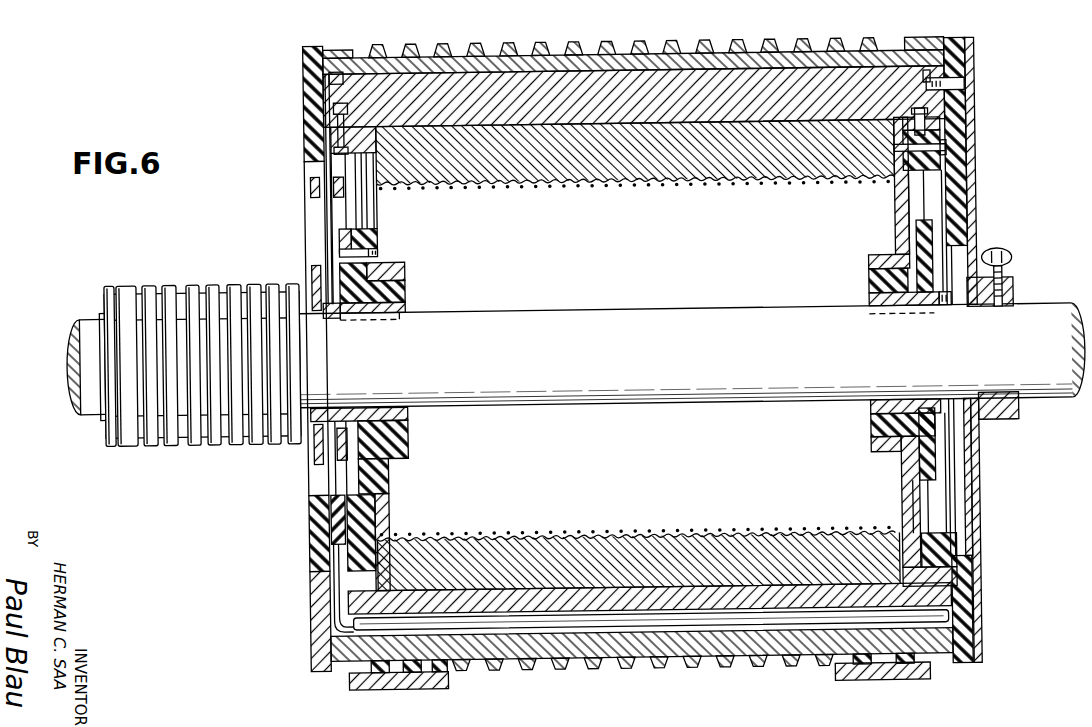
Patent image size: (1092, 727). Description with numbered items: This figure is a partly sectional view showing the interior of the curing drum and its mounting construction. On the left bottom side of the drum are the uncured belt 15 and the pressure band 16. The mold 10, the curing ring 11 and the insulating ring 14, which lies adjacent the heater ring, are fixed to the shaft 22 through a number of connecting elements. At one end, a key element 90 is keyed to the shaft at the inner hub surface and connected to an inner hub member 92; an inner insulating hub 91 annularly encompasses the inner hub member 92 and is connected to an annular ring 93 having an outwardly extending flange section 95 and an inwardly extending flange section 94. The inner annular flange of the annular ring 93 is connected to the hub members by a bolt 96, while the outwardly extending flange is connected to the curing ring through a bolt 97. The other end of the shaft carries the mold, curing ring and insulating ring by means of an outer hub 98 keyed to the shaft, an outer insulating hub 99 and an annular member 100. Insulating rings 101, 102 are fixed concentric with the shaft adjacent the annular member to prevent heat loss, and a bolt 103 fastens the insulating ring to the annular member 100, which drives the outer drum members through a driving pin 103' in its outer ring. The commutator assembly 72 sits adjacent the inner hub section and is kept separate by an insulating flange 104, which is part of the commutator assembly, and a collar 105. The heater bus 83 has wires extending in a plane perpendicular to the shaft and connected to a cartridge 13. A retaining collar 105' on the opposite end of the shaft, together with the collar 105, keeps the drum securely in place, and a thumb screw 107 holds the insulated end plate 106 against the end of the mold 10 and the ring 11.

The mold 10 is at (398, 52).
The curing ring 11 is at (452, 88).
The cartridge 13 is at (650, 628).
The insulating ring 14 is at (578, 184).
The uncured belt 15 is at (424, 687).
The pressure band 16 is at (398, 687).
The shaft 22 is at (80, 312).
The commutator assembly 72 is at (175, 279).
The heater bus 83 is at (312, 545).
The key element 90 is at (400, 320).
The inner insulating hub 91 is at (406, 290).
The inner hub member 92 is at (406, 304).
The annular ring 93 is at (379, 236).
The inwardly extending flange section 94 is at (406, 268).
The outwardly extending flange section 95 is at (327, 135).
The bolt 96 is at (379, 250).
The bolt 97 is at (307, 118).
The outer hub 98 is at (870, 304).
The outer insulating hub 99 is at (870, 282).
The annular member 100 is at (897, 218).
The insulating ring 101 is at (912, 170).
The insulating ring 102 is at (946, 168).
The bolt 103 is at (960, 126).
The driving pin 103' is at (972, 95).
The insulating flange 104 is at (313, 268).
The collar 105 is at (301, 179).
The retaining collar 105' is at (997, 477).
The insulated end plate 106 is at (1018, 410).
The thumb screw 107 is at (1013, 262).